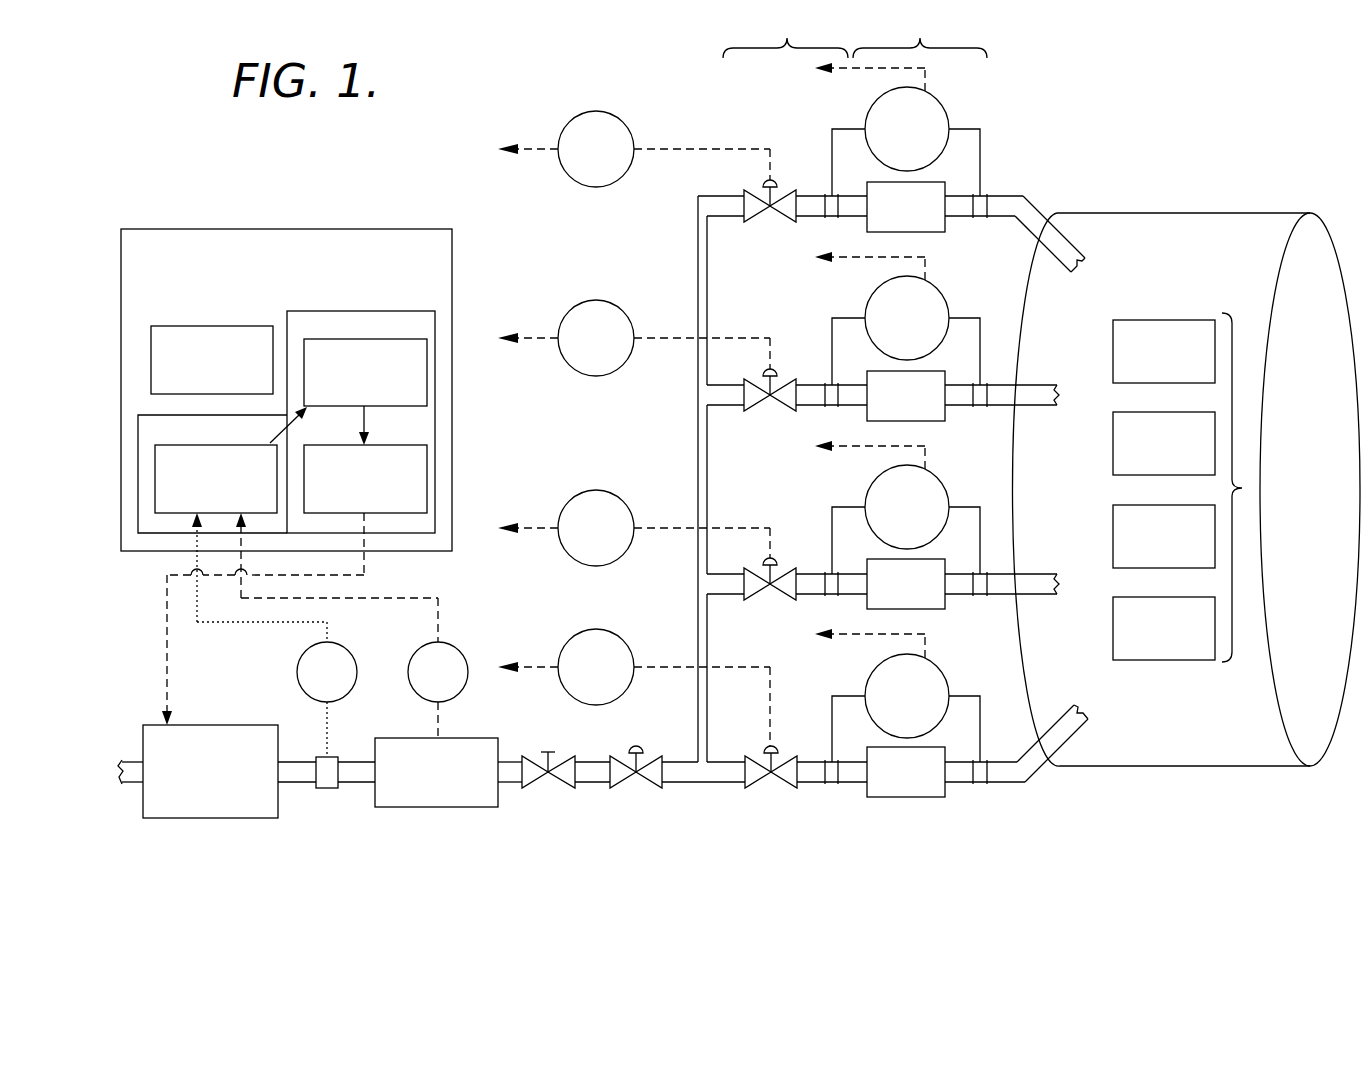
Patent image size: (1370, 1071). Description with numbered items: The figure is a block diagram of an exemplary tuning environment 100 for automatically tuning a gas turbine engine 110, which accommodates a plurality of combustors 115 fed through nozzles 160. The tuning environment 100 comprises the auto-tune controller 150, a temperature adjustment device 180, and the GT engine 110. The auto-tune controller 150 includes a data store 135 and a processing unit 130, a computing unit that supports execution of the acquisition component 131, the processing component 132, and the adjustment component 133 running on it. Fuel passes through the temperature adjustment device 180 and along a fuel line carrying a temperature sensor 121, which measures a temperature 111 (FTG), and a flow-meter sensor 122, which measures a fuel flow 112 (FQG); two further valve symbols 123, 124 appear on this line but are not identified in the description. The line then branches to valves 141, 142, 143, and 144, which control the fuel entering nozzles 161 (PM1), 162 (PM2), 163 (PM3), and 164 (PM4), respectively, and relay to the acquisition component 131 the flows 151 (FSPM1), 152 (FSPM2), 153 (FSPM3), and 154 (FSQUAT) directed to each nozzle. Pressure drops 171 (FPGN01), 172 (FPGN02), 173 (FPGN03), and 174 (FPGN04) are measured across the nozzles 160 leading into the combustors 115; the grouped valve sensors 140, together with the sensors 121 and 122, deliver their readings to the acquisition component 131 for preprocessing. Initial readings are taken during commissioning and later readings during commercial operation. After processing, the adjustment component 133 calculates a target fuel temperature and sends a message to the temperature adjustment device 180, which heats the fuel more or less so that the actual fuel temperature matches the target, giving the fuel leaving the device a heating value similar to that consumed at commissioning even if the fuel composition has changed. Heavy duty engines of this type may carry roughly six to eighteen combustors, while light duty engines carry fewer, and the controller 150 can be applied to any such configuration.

The tuning environment 100 is at (340, 178).
The gas turbine engine 110 is at (1256, 213).
The temperature (FTG) 111 is at (348, 649).
The fuel flow (FQG) 112 is at (459, 650).
The combustors 115 is at (1250, 488).
The temperature sensor 121 is at (327, 788).
The flow-meter sensor 122 is at (437, 807).
The manual valve 123 is at (543, 777).
The control valve 124 is at (631, 777).
The processing unit 130 is at (368, 311).
The acquisition component 131 is at (213, 445).
The processing component 132 is at (378, 339).
The adjustment component 133 is at (378, 445).
The data store 135 is at (188, 326).
The sensors 140 is at (785, 37).
The valve 141 is at (765, 211).
The valve 142 is at (765, 400).
The valve 143 is at (765, 589).
The valve 144 is at (766, 777).
The auto-tune controller 150 is at (303, 290).
The flow (FSPM1) 151 is at (609, 116).
The flow (FSPM2) 152 is at (609, 305).
The flow (FSPM3) 153 is at (611, 494).
The flow (FSQUAT) 154 is at (611, 634).
The nozzles 160 is at (920, 37).
The nozzle (PM1) 161 is at (933, 232).
The nozzle (PM2) 162 is at (933, 421).
The nozzle (PM3) 163 is at (933, 609).
The nozzle (PM4) 164 is at (913, 797).
The pressure drop (FPGN01) 171 is at (937, 100).
The pressure drop (FPGN02) 172 is at (937, 290).
The pressure drop (FPGN03) 173 is at (937, 480).
The pressure drop (FPGN04) 174 is at (937, 668).
The temperature adjustment device 180 is at (232, 725).